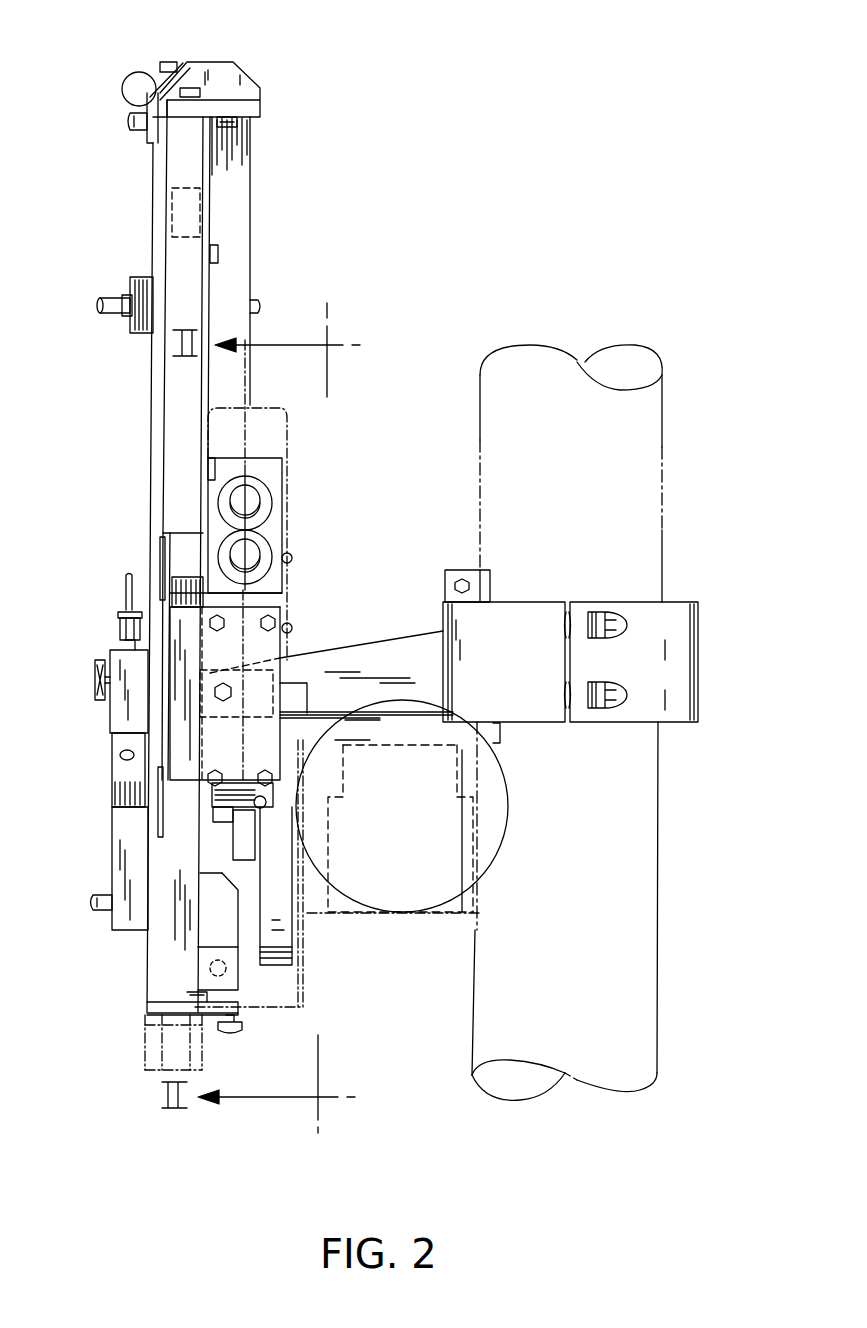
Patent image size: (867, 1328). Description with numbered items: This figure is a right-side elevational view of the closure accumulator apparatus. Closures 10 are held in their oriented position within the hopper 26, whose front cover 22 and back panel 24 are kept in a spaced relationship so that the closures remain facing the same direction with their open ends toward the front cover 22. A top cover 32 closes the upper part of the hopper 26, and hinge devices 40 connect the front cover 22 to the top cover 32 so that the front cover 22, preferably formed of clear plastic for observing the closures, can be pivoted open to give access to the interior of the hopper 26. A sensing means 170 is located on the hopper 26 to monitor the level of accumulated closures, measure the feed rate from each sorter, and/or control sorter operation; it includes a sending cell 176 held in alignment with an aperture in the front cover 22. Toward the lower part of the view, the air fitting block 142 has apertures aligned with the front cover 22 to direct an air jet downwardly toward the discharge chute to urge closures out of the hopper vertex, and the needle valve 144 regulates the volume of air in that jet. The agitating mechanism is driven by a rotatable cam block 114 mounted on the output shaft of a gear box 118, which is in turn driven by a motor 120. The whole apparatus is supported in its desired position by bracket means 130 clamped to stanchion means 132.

The closures 10 is at (172, 210).
The front cover 22 is at (153, 172).
The back panel 24 is at (213, 178).
The hopper 26 is at (137, 153).
The top cover 32 is at (258, 98).
The hinge devices 40 is at (135, 72).
The cam block 114 is at (278, 938).
The gear box 118 is at (482, 848).
The motor 120 is at (407, 880).
The bracket means 130 is at (704, 666).
The stanchion means 132 is at (665, 495).
The air fitting block 142 is at (115, 905).
The needle valve 144 is at (117, 707).
The sensing means 170 is at (128, 284).
The sending cell 176 is at (135, 315).